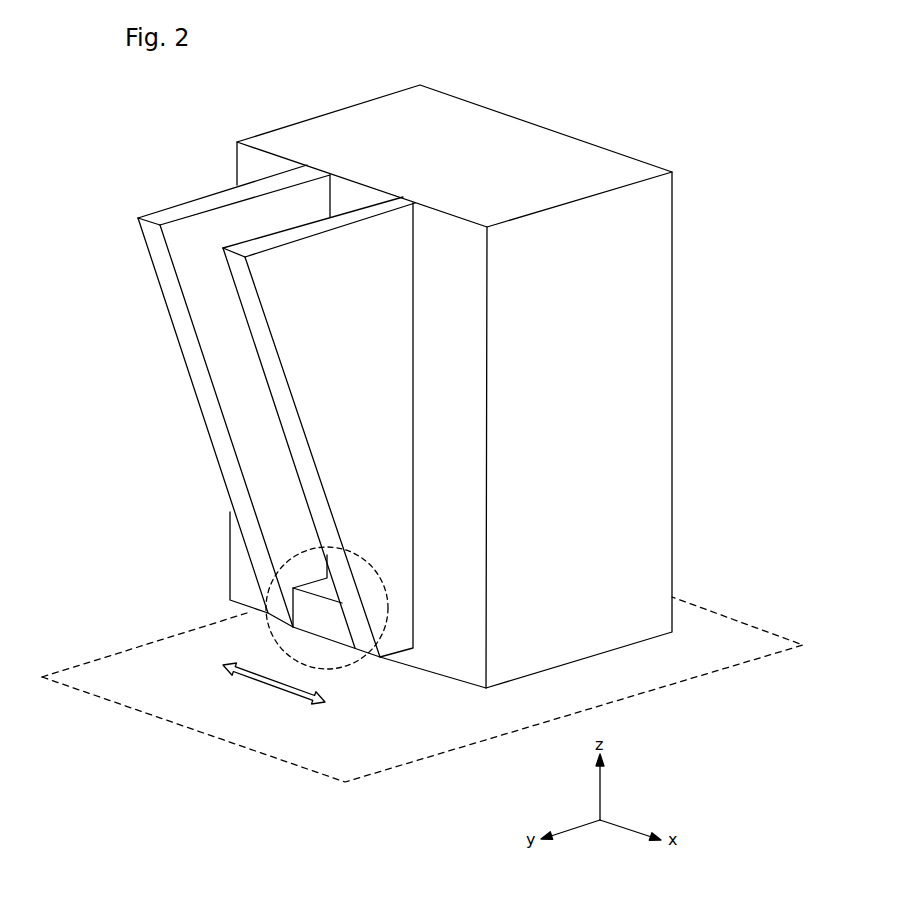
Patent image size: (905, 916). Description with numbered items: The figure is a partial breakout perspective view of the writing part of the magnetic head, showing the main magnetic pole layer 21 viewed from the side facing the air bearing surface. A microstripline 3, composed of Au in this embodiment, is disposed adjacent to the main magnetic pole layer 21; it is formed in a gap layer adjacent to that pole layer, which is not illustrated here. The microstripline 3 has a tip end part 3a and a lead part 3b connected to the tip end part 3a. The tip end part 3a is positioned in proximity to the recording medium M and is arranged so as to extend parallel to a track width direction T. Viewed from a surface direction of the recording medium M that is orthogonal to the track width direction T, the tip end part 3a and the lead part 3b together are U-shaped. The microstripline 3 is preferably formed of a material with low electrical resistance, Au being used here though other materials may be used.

The main magnetic pole layer 21 is at (518, 127).
The microstripline 3 is at (289, 426).
The tip end part 3a is at (334, 634).
The lead part 3b is at (275, 393).
The recording medium M is at (138, 656).
The track width direction T is at (274, 686).